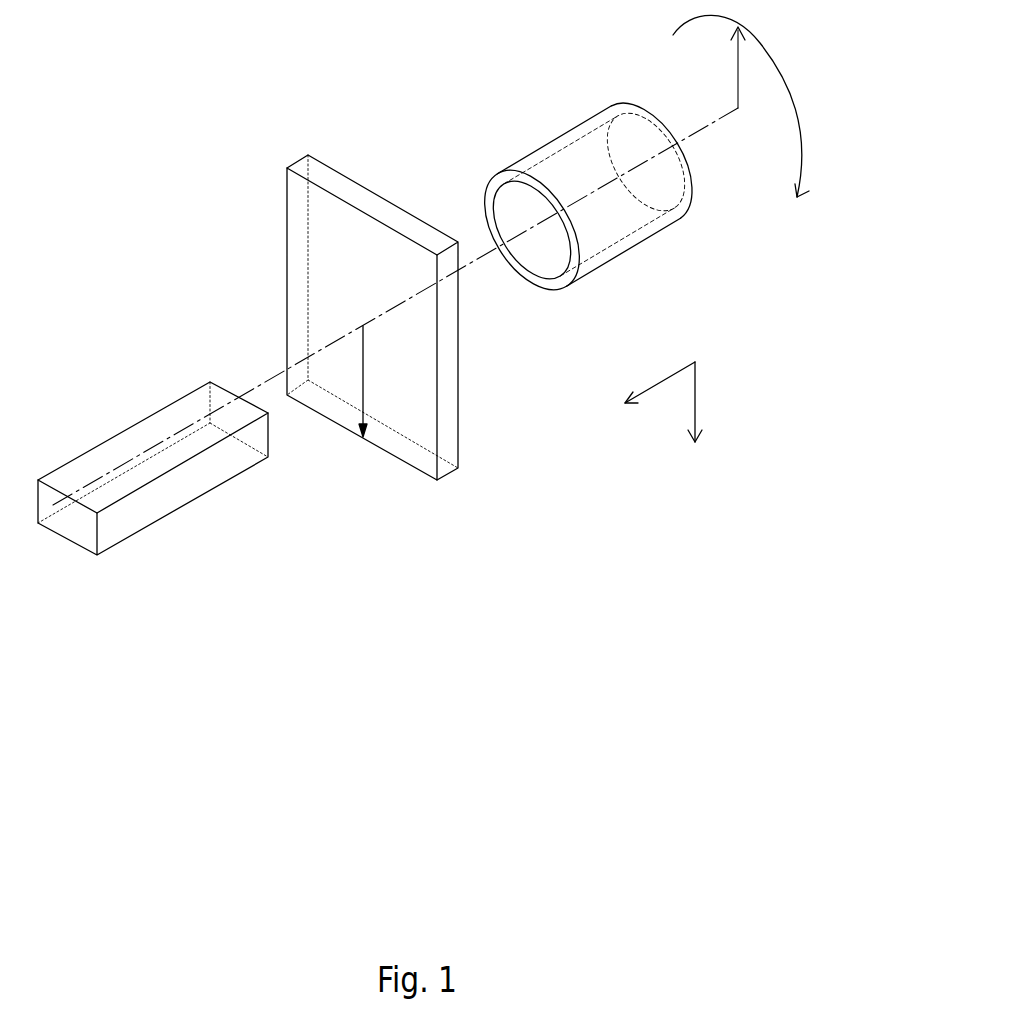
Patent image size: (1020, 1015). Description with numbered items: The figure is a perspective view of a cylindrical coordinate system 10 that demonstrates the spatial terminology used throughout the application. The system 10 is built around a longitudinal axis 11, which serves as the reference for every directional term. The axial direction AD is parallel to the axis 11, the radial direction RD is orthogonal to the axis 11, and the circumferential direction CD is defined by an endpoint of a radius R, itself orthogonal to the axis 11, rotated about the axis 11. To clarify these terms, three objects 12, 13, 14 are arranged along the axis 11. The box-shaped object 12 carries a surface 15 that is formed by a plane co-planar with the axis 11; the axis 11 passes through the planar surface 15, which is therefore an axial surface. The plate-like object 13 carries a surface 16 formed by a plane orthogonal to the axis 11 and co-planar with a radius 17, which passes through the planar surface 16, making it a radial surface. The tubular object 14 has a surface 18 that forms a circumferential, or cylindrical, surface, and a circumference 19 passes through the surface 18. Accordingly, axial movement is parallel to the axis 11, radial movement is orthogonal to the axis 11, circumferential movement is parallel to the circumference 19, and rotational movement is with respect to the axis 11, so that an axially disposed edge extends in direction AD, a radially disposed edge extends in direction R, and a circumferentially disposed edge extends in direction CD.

The cylindrical coordinate system 10 is at (238, 198).
The longitudinal axis 11 is at (687, 138).
The object 12 is at (125, 553).
The object 13 is at (478, 476).
The object 14 is at (623, 273).
The axial surface 15 is at (117, 452).
The radial surface 16 is at (302, 278).
The radius 17 is at (363, 373).
The circumferential surface 18 is at (558, 143).
The circumference 19 is at (487, 195).
The radius R is at (738, 67).
The circumferential direction CD is at (787, 72).
The axial direction AD is at (660, 380).
The radial direction RD is at (695, 398).